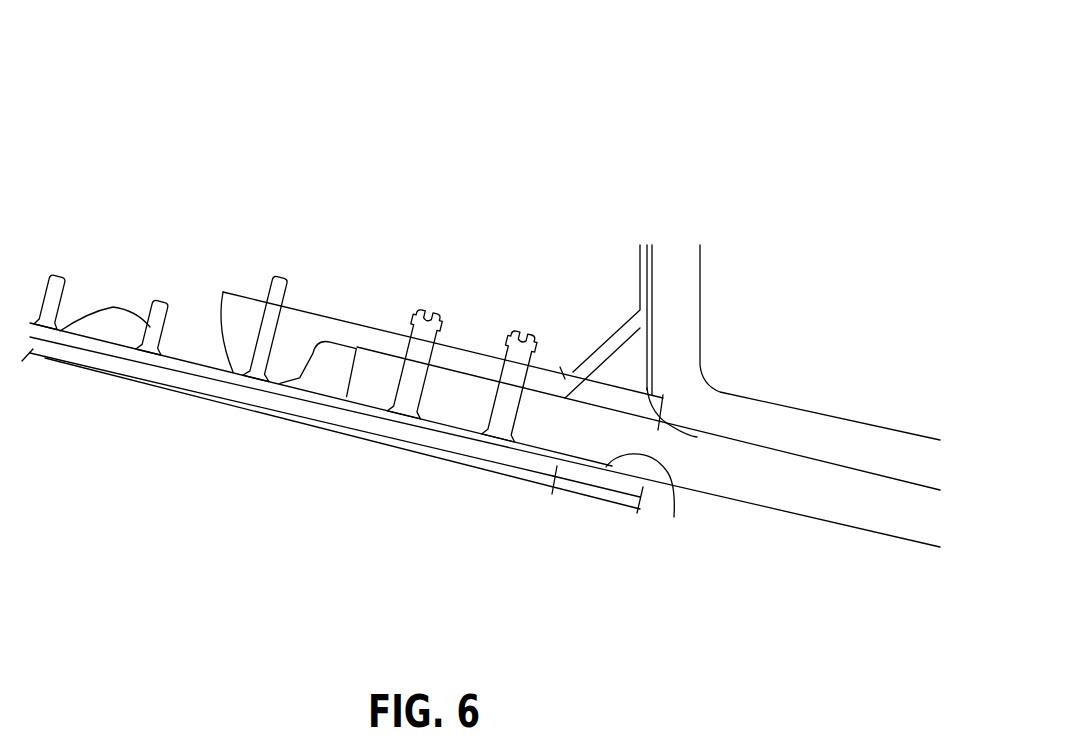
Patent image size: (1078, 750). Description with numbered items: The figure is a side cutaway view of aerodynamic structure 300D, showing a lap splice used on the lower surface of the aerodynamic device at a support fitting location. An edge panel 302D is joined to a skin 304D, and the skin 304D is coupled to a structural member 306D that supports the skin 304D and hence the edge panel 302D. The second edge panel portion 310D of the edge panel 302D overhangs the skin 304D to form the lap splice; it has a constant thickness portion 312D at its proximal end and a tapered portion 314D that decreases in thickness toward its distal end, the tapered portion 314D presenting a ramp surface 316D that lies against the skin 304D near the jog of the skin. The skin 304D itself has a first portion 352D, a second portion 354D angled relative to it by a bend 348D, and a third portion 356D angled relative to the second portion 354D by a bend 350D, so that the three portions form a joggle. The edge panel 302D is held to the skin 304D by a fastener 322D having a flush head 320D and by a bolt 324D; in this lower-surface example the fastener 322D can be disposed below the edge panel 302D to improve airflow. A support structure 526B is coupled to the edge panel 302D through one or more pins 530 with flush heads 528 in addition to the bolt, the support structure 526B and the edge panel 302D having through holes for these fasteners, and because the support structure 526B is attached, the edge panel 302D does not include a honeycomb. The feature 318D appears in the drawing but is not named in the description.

The aerodynamic structure 300D is at (282, 66).
The edge panel 302D is at (310, 405).
The skin 304D is at (820, 520).
The structural member 306D is at (827, 413).
The second edge panel portion 310D is at (163, 384).
The constant thickness portion 312D is at (480, 473).
The tapered portion 314D is at (593, 503).
The ramp surface 316D is at (674, 517).
The bent tab 318D is at (606, 372).
The flush head 320D is at (388, 403).
The fastener (bolt) 322D is at (402, 440).
The bolt 324D is at (452, 300).
The bend 348D is at (697, 458).
The bend 350D is at (596, 435).
The first portion 352D is at (880, 507).
The second portion 354D is at (565, 456).
The third portion 356D is at (463, 400).
The support structure 526B is at (337, 330).
The flush head 528 is at (222, 292).
The pins 530 is at (272, 288).